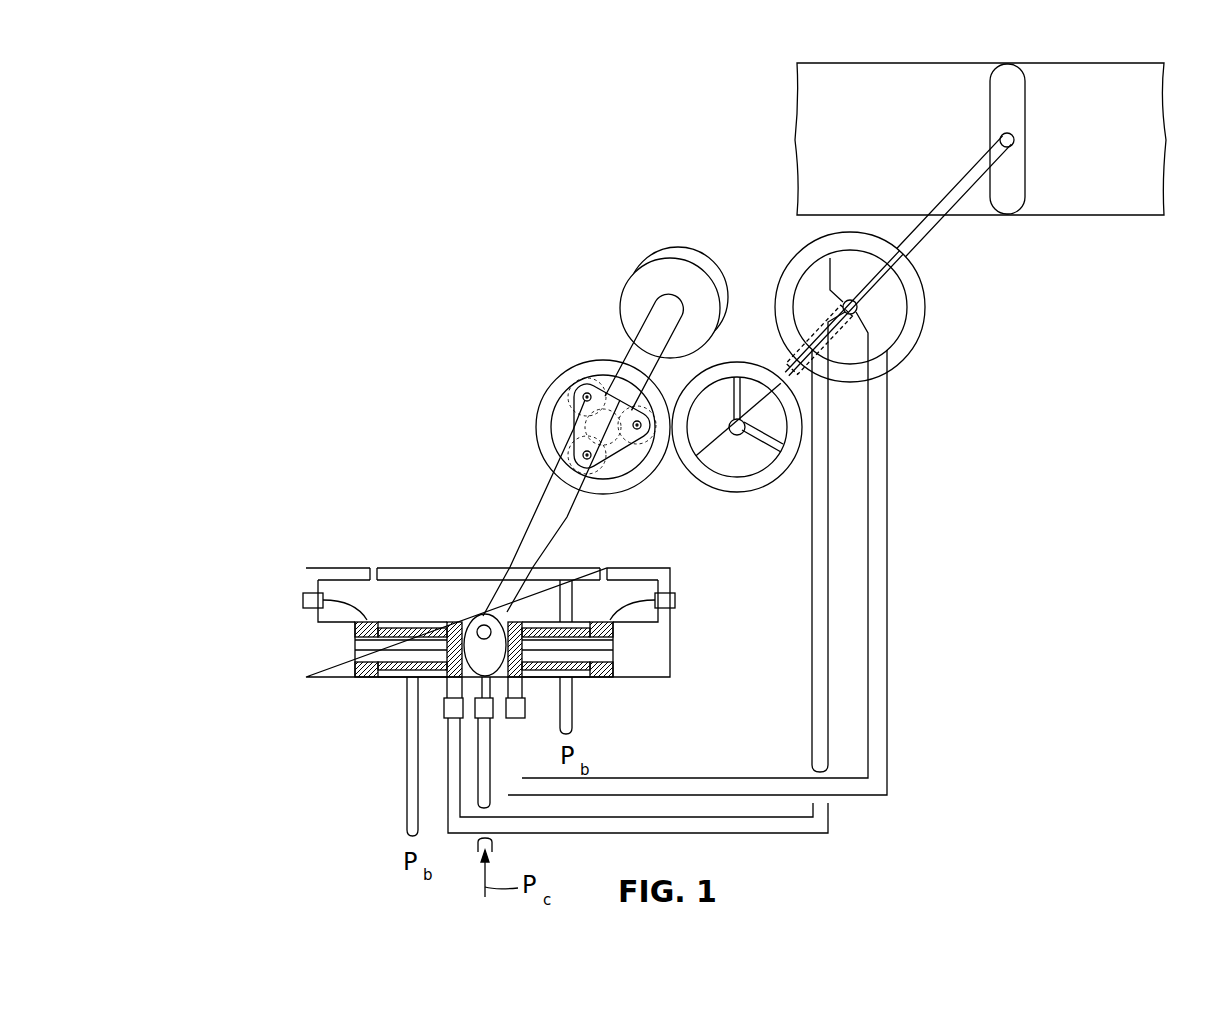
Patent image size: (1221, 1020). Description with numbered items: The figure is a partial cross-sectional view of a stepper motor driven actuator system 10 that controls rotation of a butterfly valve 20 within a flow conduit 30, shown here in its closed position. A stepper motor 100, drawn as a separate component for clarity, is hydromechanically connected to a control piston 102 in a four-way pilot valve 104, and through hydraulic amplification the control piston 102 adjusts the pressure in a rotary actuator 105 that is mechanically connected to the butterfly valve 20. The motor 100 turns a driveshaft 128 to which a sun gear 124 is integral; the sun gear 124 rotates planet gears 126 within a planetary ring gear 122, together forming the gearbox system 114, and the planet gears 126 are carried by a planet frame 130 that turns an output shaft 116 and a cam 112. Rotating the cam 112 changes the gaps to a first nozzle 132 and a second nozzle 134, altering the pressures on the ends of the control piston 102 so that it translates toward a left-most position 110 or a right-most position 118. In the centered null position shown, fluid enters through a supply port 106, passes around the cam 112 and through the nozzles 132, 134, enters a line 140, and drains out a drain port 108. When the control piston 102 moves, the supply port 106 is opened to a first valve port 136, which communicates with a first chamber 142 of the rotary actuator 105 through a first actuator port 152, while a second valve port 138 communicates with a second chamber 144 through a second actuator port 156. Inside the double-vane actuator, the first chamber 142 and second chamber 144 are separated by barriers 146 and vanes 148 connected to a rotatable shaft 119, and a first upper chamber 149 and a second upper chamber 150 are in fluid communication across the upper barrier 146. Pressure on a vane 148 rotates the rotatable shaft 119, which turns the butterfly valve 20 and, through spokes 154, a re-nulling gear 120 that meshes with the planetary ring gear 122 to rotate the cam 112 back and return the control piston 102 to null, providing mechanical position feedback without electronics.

The stepper motor driven actuator system 10 is at (223, 166).
The butterfly valve 20 is at (990, 96).
The flow conduit 30 is at (1132, 216).
The stepper motor 100 is at (655, 252).
The control piston 102 is at (303, 599).
The four-way pilot valve 104 is at (400, 618).
The rotary actuator 105 is at (915, 326).
The supply port 106 is at (470, 688).
The drain port 108 is at (405, 680).
The left-most position 110 is at (307, 655).
The cam 112 is at (473, 616).
The gearbox system 114 is at (489, 410).
The output shaft 116 is at (520, 557).
The right-most position 118 is at (670, 655).
The rotatable shaft 119 is at (930, 232).
The re-nulling gear 120 is at (708, 480).
The planetary ring gear 122 is at (547, 413).
The sun gear 124 is at (607, 435).
The planet gears 126 is at (588, 390).
The driveshaft 128 is at (640, 356).
The planet frame 130 is at (556, 445).
The first nozzle 132 is at (355, 650).
The second nozzle 134 is at (613, 650).
The first valve port 136 is at (447, 688).
The second valve port 138 is at (517, 688).
The line 140 is at (400, 567).
The first chamber 142 is at (783, 362).
The second chamber 144 is at (922, 330).
The barriers 146 is at (848, 270).
The vanes 148 is at (800, 349).
The first upper chamber 149 is at (808, 291).
The second upper chamber 150 is at (873, 245).
The first actuator port 152 is at (815, 414).
The spokes 154 is at (755, 470).
The second actuator port 156 is at (876, 366).